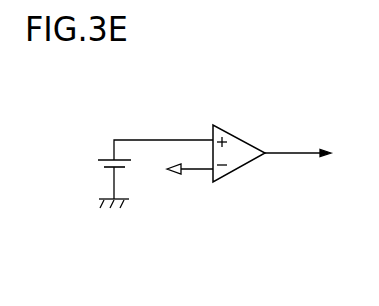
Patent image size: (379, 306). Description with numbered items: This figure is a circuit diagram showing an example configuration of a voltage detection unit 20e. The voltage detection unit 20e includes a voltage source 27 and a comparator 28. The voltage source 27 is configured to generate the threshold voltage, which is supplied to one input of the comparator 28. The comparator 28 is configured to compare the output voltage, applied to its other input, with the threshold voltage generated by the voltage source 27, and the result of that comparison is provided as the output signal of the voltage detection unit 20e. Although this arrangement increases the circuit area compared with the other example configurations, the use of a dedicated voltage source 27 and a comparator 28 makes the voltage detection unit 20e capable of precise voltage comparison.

The voltage detection unit 20e is at (227, 280).
The voltage source 27 is at (99, 166).
The comparator 28 is at (236, 171).